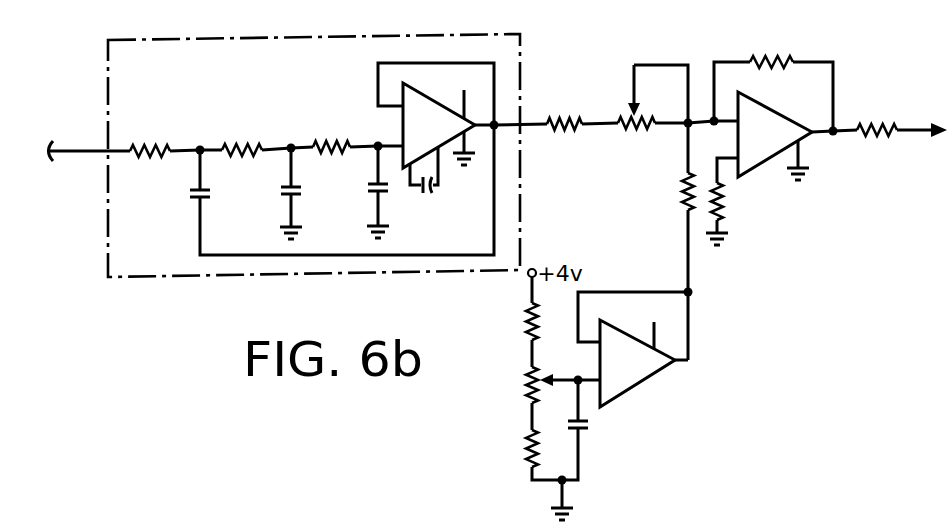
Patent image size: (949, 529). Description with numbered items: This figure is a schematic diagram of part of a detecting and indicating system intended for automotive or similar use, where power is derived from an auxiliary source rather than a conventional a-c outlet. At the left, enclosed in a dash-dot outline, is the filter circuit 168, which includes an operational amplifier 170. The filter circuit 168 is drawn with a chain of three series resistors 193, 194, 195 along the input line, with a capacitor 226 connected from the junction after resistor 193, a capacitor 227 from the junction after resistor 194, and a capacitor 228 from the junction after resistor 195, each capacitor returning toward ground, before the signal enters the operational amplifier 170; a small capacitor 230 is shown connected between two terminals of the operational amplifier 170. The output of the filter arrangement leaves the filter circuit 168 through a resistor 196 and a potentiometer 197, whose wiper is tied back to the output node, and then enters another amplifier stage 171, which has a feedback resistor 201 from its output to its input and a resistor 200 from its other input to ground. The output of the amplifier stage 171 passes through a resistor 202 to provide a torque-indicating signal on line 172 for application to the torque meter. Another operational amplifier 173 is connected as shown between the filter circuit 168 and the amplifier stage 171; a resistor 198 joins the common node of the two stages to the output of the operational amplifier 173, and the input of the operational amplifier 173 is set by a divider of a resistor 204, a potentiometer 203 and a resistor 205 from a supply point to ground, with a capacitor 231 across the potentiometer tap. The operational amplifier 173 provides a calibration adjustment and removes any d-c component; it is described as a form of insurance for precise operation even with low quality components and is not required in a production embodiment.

The filter circuit 168 is at (283, 276).
The operational amplifier 170 is at (435, 125).
The amplifier stage 171 is at (784, 136).
The line 172 is at (925, 127).
The operational amplifier 173 is at (633, 349).
The resistor 193 is at (149, 137).
The resistor 194 is at (243, 136).
The resistor 195 is at (333, 133).
The resistor 196 is at (567, 137).
The potentiometer 197 is at (654, 108).
The resistor 198 is at (666, 241).
The resistor 200 is at (739, 201).
The feedback resistor 201 is at (773, 81).
The output resistor 202 is at (880, 143).
The potentiometer 203 is at (538, 385).
The resistor 204 is at (506, 321).
The resistor 205 is at (507, 448).
The capacitor 226 is at (178, 179).
The capacitor 227 is at (313, 193).
The capacitor 228 is at (369, 181).
The capacitor 230 is at (428, 182).
The capacitor 231 is at (601, 409).